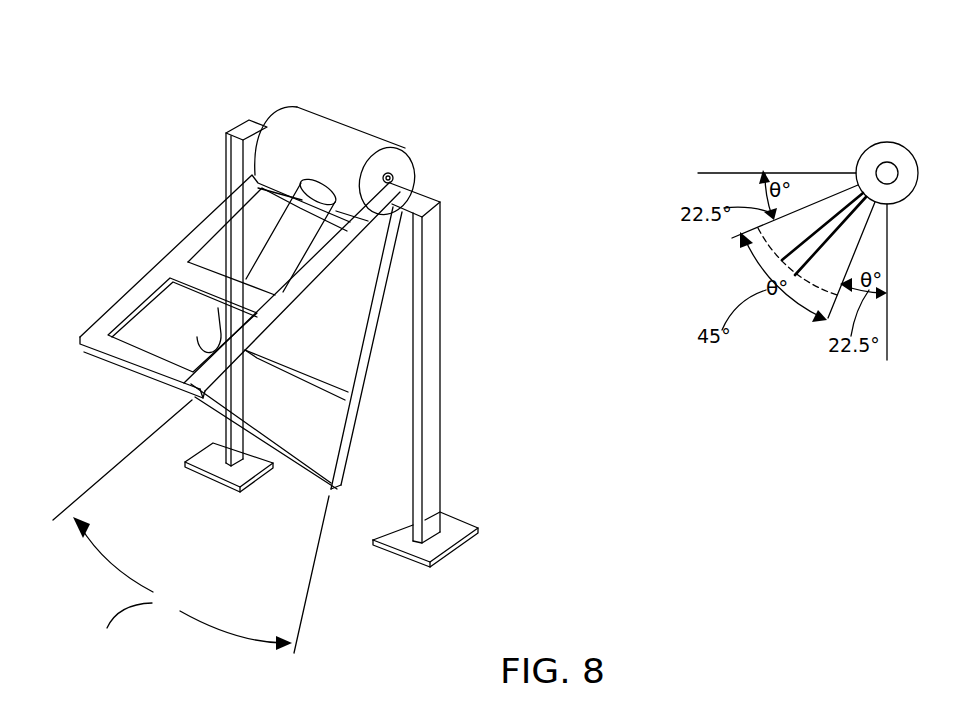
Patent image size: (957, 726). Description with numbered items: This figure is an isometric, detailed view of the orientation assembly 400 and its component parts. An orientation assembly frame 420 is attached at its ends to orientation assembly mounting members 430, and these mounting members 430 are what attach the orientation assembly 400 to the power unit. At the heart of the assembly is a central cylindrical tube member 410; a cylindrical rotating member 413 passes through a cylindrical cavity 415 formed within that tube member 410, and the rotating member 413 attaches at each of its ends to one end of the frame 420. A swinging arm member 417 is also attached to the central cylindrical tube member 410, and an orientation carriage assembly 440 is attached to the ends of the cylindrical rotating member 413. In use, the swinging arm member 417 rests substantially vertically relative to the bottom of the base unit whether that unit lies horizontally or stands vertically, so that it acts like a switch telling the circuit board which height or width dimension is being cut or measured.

The orientation assembly 400 is at (164, 107).
The central cylindrical tube member 410 is at (338, 136).
The cylindrical rotating member 413 is at (384, 175).
The cylindrical cavity 415 is at (392, 176).
The swinging arm member 417 is at (278, 250).
The orientation assembly frame 420 is at (435, 390).
The orientation assembly mounting members 430 is at (440, 542).
The orientation carriage assembly 440 is at (176, 263).